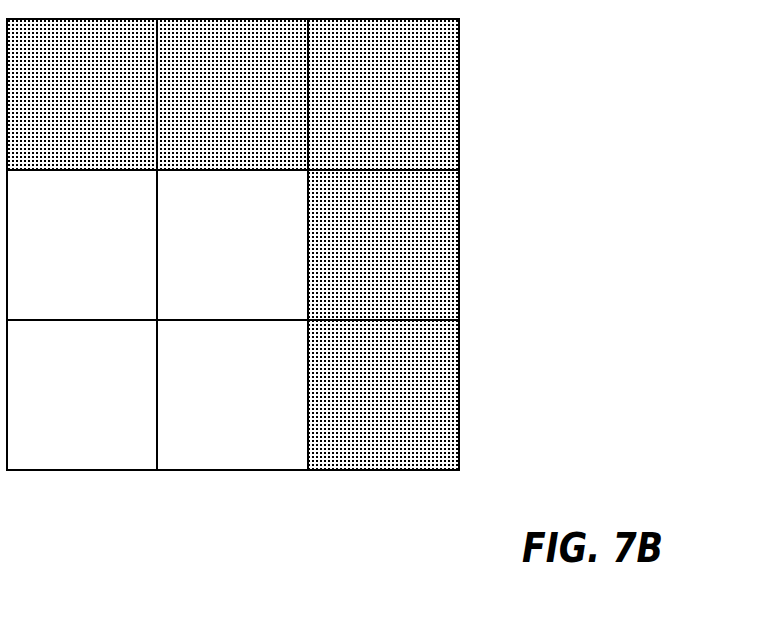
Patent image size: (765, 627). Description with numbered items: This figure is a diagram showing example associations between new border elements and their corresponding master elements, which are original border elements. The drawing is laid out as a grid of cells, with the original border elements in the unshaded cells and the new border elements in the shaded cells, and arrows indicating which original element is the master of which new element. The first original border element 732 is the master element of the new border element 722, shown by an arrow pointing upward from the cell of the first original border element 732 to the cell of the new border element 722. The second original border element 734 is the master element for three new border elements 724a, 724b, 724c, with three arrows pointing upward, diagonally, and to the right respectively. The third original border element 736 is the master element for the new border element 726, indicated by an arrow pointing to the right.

The new border element 722 is at (83, 222).
The new border element 724a is at (217, 222).
The new border element 724b is at (233, 248).
The new border element 724c is at (256, 271).
The new border element 726 is at (253, 392).
The first original border element 732 is at (82, 245).
The second original border element 734 is at (232, 245).
The third original border element 736 is at (232, 395).